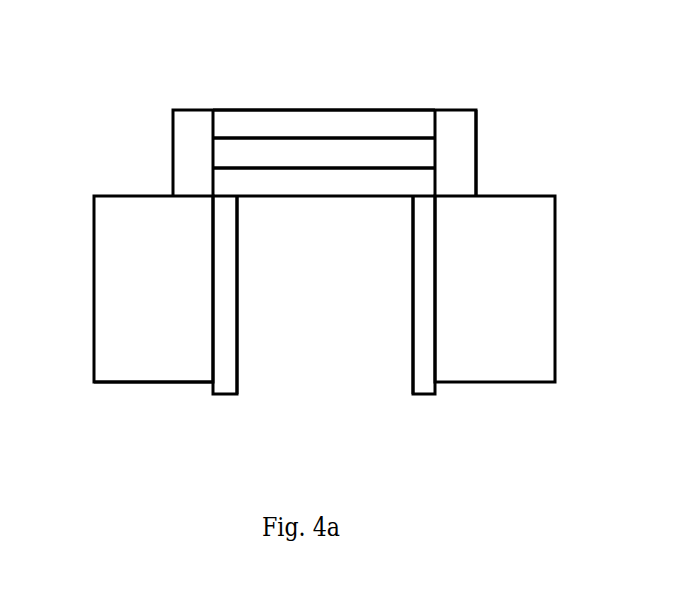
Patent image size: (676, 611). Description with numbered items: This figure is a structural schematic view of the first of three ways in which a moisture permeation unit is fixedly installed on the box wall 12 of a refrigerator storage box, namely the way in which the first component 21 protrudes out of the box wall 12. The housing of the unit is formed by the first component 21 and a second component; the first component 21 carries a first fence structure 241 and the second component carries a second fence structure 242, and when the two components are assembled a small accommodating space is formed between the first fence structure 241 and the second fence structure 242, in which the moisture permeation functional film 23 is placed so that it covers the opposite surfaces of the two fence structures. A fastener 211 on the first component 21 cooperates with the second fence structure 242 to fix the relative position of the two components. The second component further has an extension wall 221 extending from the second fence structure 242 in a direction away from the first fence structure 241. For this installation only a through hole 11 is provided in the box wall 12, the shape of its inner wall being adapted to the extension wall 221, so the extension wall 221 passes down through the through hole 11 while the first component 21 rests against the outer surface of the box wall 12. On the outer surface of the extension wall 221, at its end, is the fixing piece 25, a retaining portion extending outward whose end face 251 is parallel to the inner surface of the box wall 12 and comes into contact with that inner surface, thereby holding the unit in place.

The unit hole 11 is at (330, 350).
The box wall 12 is at (122, 288).
The first component 21 is at (193, 132).
The fastener 211 is at (472, 137).
The extension wall 221 is at (427, 333).
The moisture permeation functional film 23 is at (392, 160).
The first fence structure 241 is at (298, 130).
The second fence structure 242 is at (264, 184).
The fixing piece 25 is at (440, 382).
The end face 251 is at (213, 390).